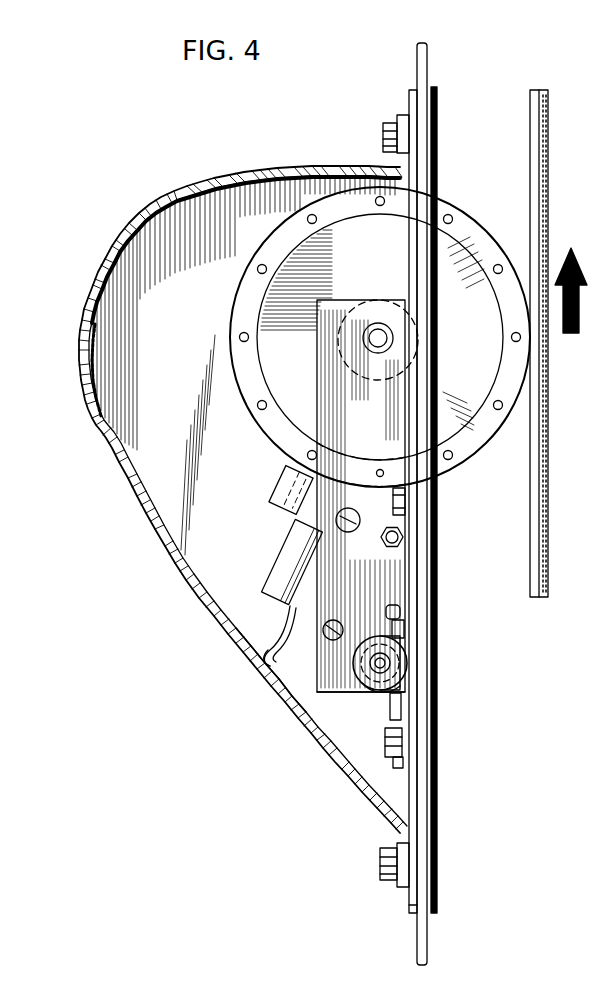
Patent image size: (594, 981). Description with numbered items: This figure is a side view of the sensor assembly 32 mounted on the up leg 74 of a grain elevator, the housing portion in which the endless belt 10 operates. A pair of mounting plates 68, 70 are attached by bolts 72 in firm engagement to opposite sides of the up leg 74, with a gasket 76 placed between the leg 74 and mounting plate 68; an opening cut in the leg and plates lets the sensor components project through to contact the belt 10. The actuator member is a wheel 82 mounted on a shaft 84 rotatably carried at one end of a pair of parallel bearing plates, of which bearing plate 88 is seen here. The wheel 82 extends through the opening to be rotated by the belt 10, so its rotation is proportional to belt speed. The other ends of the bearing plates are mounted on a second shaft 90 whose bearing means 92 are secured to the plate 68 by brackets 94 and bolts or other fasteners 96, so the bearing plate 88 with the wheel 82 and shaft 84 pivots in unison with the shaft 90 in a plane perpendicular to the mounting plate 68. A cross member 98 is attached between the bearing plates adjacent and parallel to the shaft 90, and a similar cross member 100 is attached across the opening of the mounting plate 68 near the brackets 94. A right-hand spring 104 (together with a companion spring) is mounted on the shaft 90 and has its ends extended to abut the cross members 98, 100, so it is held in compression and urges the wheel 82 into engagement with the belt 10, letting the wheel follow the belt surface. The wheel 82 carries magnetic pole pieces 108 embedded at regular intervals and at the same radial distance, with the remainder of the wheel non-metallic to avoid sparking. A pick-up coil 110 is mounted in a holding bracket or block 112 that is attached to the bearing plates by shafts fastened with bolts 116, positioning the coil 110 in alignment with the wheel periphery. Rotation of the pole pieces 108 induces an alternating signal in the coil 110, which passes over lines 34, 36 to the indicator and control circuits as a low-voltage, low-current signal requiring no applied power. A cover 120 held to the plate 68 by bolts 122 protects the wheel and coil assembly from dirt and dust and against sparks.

The belt 10 is at (540, 533).
The sensor assembly 32 is at (211, 639).
The line 34 is at (275, 626).
The line 36 is at (263, 659).
The mounting plate 68 is at (409, 900).
The mounting plate 70 is at (438, 900).
The bolts 72 is at (380, 862).
The up leg 74 is at (414, 52).
The gasket 76 is at (409, 912).
The wheel 82 is at (452, 203).
The shaft 84 is at (376, 345).
The bearing plate 88 is at (317, 356).
The shaft 90 is at (390, 660).
The bearing means 92 is at (400, 670).
The brackets 94 is at (398, 632).
The bolts or other fasteners 96 is at (392, 606).
The cross member 98 is at (338, 622).
The cross member 100 is at (400, 764).
The right-hand spring 104 is at (345, 694).
The magnetic pole pieces 108 is at (258, 271).
The coil 110 is at (270, 568).
The holding bracket or block 112 is at (278, 498).
The bolts 116 is at (360, 523).
The cover 120 is at (271, 690).
The bolts 122 is at (383, 136).